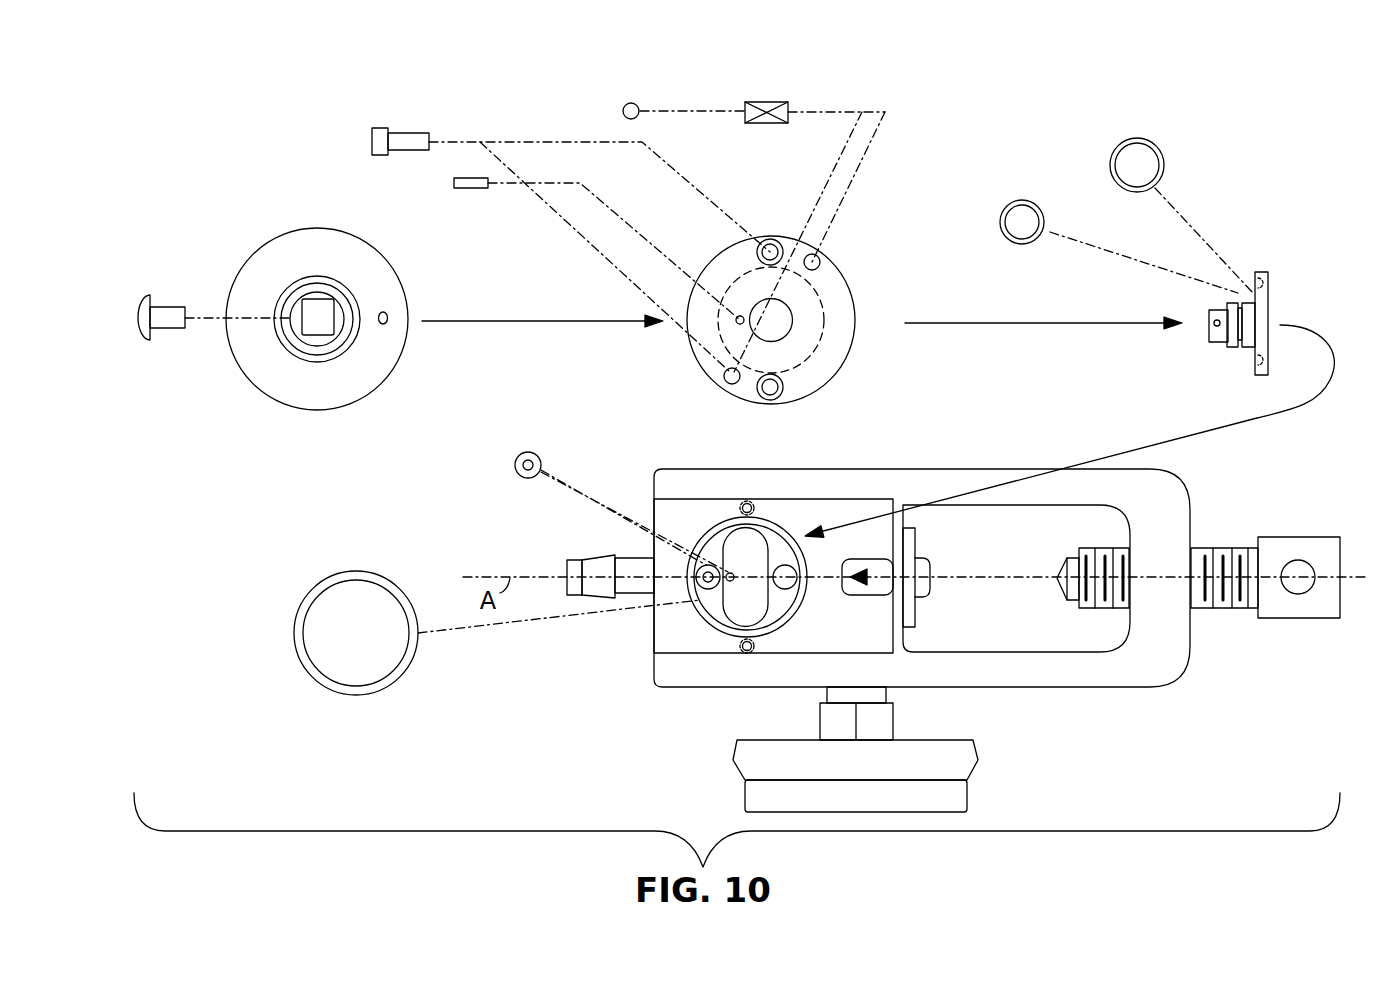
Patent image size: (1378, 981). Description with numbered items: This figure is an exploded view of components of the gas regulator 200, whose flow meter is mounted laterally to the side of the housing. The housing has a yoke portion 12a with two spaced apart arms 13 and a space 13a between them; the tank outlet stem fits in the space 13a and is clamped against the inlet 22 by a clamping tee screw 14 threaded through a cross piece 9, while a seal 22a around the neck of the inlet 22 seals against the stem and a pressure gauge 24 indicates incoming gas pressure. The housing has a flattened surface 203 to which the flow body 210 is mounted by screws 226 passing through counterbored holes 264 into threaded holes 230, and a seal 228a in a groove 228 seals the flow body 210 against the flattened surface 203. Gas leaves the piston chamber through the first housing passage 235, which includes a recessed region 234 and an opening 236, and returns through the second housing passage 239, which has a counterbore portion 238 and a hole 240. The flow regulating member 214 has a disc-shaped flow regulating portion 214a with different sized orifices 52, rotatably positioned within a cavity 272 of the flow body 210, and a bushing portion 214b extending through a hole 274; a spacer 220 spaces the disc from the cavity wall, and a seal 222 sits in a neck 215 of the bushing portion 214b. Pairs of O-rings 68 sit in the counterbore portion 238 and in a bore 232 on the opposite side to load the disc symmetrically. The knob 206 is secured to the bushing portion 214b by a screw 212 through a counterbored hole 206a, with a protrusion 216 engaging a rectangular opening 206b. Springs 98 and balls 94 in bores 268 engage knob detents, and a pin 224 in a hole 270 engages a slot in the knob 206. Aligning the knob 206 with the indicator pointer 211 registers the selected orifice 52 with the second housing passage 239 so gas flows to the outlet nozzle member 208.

The cross piece 9 is at (1172, 615).
The yoke portion 12a is at (1102, 670).
The arms 13 is at (925, 475).
The space 13a is at (1018, 617).
The clamping tee screw 14 is at (1293, 607).
The inlet 22 is at (925, 568).
The seal 22a is at (908, 613).
The pressure gauge 24 is at (747, 771).
The orifices 52 is at (1255, 283).
The O-rings 68 is at (538, 445).
The balls 94 is at (623, 111).
The springs 98 is at (763, 123).
The gas regulator 200 is at (1213, 746).
The flattened surface 203 is at (797, 510).
The knob 206 is at (290, 230).
The counterbored hole 206a is at (297, 348).
The rectangular opening 206b is at (328, 327).
The outlet nozzle member 208 is at (588, 557).
The flow body 210 is at (843, 337).
The indicator pointer 211 is at (872, 585).
The screw 212 is at (168, 308).
The flow regulating member 214 is at (1263, 305).
The flow regulating portion 214a is at (1270, 313).
The bushing portion 214b is at (1227, 343).
The neck 215 is at (1240, 345).
The protrusion 216 is at (1210, 313).
The spacer 220 is at (1108, 153).
The seal 222 is at (1005, 206).
The pin 224 is at (472, 188).
The screws 226 is at (372, 138).
The groove 228 is at (790, 620).
The seal 228a is at (380, 672).
The threaded holes 230 is at (748, 655).
The bore 232 is at (787, 575).
The recessed region 234 is at (758, 597).
The first housing passage 235 is at (755, 613).
The opening 236 is at (735, 582).
The counterbore portion 238 is at (718, 588).
The second housing passage 239 is at (705, 568).
The hole 240 is at (717, 590).
The counterbored holes 264 is at (773, 240).
The bores 268 is at (820, 262).
The hole 270 is at (740, 316).
The cavity 272 is at (860, 287).
The hole 274 is at (788, 335).